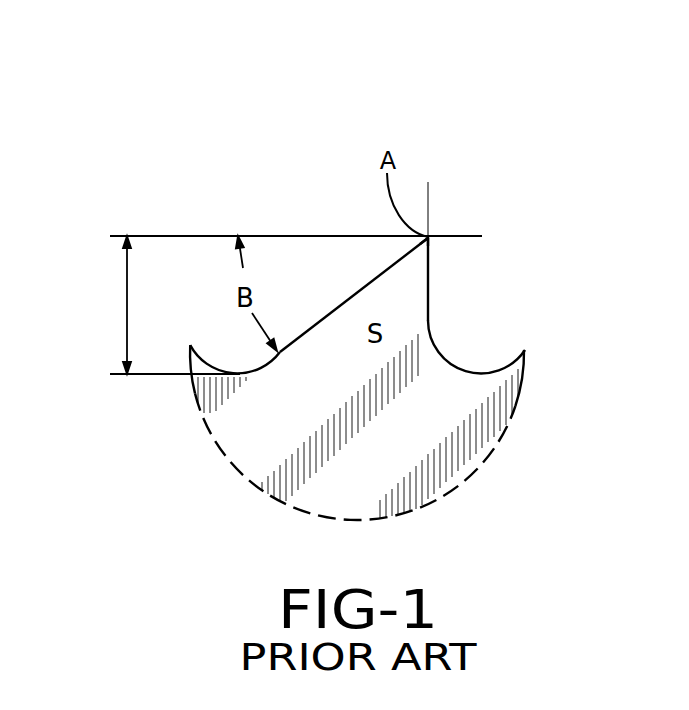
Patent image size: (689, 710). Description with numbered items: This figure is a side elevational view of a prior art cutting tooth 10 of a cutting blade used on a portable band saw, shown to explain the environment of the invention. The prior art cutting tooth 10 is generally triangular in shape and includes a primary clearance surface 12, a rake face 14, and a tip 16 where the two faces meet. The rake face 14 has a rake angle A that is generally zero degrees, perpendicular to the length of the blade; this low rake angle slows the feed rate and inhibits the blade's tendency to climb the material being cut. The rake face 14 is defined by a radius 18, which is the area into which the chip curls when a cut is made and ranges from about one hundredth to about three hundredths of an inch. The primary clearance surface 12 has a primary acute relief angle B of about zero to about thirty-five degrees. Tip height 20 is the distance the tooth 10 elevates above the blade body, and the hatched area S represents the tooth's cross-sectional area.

The prior art cutting tooth 10 is at (250, 122).
The primary clearance surface 12 is at (368, 282).
The rake face 14 is at (430, 297).
The tip 16 is at (430, 240).
The radius 18 is at (464, 356).
The tip height 20 is at (127, 305).